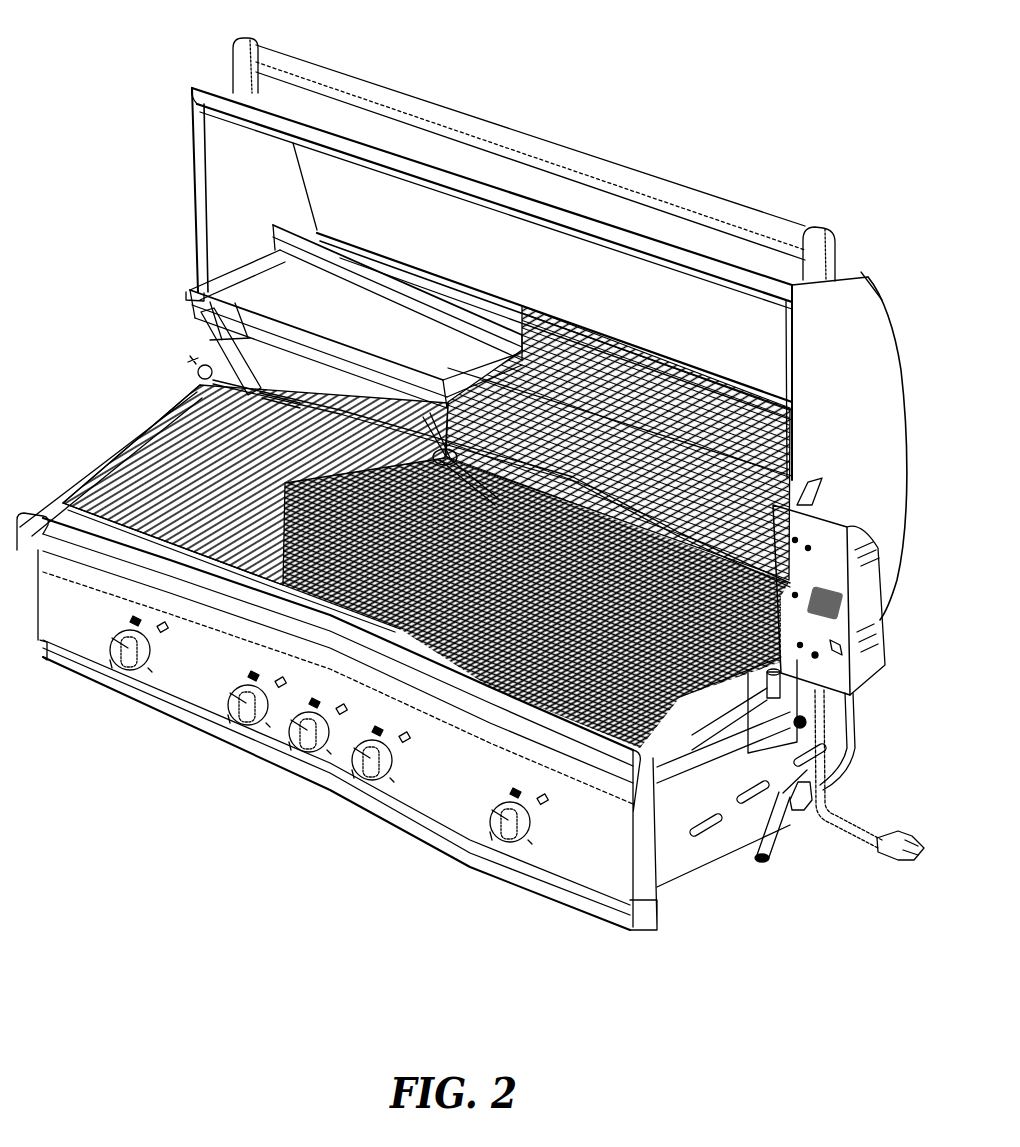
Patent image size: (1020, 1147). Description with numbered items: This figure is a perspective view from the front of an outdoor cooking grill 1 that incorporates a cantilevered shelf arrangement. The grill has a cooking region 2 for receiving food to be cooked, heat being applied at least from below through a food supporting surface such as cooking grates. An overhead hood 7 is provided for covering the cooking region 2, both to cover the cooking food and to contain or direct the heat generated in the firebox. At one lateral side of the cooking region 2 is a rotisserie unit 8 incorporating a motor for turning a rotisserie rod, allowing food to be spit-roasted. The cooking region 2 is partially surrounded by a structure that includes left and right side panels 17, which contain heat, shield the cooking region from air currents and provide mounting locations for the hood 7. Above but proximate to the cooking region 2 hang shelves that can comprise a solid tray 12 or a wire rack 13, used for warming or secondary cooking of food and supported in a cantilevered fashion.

The cooking grill 1 is at (473, 472).
The cooking region 2 is at (494, 689).
The overhead hood 7 is at (868, 320).
The rotisserie unit 8 is at (864, 599).
The solid tray 12 is at (254, 299).
The wire rack 13 is at (686, 423).
The side panel 17 is at (199, 388).